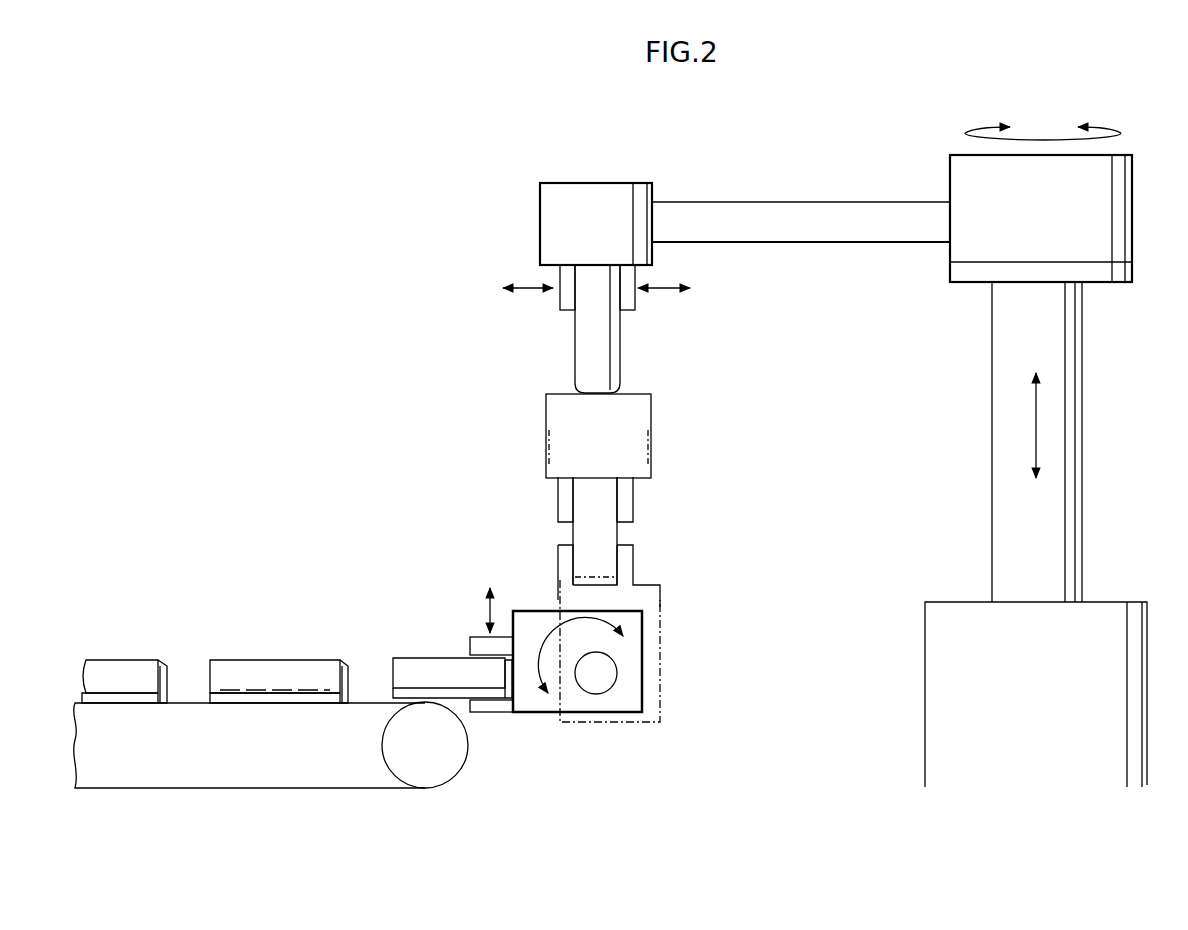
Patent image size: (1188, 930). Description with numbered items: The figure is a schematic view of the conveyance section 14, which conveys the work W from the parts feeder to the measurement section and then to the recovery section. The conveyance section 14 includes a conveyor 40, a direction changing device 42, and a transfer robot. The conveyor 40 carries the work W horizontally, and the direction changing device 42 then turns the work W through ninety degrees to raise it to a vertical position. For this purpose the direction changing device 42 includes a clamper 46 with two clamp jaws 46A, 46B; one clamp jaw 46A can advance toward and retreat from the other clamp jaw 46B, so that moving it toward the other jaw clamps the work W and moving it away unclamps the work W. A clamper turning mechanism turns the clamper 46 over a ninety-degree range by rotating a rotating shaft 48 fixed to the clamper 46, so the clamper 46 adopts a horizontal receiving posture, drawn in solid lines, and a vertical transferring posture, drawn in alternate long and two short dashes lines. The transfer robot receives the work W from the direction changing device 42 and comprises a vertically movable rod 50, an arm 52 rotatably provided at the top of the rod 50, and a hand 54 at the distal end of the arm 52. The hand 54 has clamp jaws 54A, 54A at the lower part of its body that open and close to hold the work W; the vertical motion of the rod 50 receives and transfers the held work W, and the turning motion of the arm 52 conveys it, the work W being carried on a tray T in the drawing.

The conveyance section 14 is at (232, 352).
The conveyor 40 is at (275, 773).
The direction changing device 42 is at (637, 770).
The clamper 46 is at (530, 617).
The clamp jaw 46A is at (478, 637).
The clamp jaw 46B is at (573, 585).
The rotating shaft 48 is at (600, 677).
The rod 50 is at (990, 528).
The arm 52 is at (765, 230).
The hand 54 is at (547, 240).
The clamp jaws 54A is at (567, 300).
The work W is at (578, 370).
The tray T is at (605, 397).